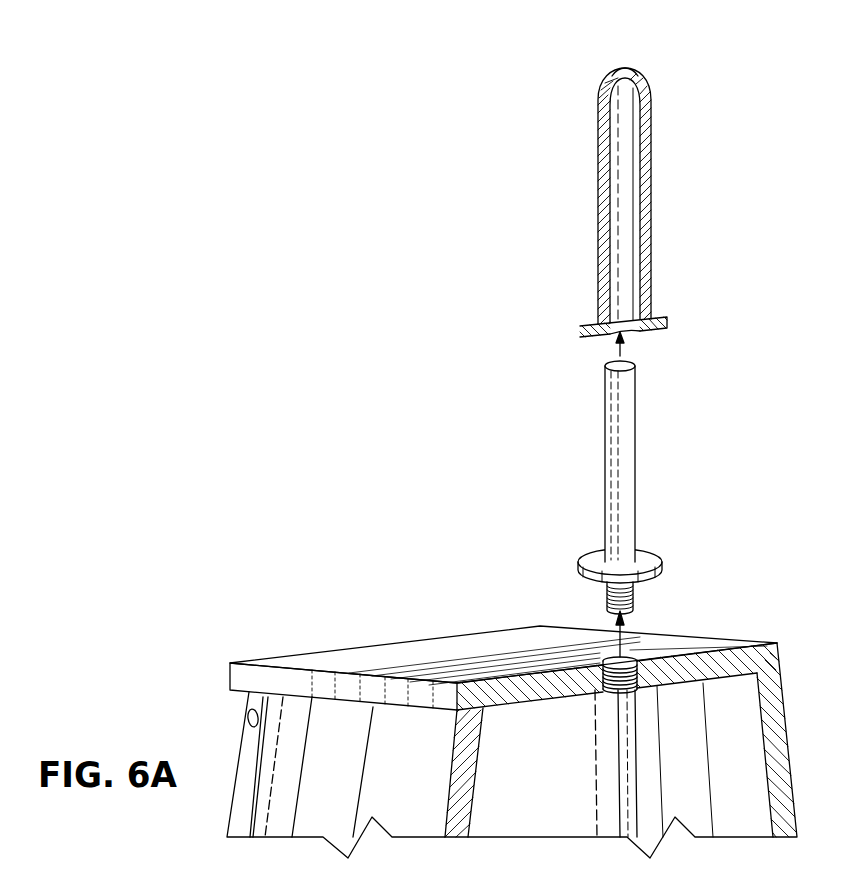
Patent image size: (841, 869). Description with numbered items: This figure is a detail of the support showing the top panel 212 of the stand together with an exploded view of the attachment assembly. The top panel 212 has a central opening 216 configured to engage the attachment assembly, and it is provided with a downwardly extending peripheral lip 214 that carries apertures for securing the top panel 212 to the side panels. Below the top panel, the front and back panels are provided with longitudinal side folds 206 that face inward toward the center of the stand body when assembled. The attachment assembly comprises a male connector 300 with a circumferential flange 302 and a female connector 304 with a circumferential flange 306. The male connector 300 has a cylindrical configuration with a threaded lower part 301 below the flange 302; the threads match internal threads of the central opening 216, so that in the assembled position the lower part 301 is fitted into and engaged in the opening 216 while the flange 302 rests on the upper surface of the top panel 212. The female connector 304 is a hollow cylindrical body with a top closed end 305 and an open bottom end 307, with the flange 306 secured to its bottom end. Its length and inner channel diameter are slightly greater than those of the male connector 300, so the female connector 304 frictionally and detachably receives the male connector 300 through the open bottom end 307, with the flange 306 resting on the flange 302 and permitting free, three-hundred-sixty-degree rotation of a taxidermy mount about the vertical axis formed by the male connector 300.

The side fold 206 is at (237, 748).
The top panel 212 is at (452, 633).
The peripheral lip 214 is at (228, 676).
The central opening 216 is at (641, 662).
The male connector 300 is at (636, 462).
The threaded lower part 301 is at (604, 607).
The male connector flange 302 is at (580, 556).
The female connector 304 is at (674, 209).
The top closed end 305 is at (624, 70).
The female connector flange 306 is at (663, 318).
The open bottom end 307 is at (625, 328).